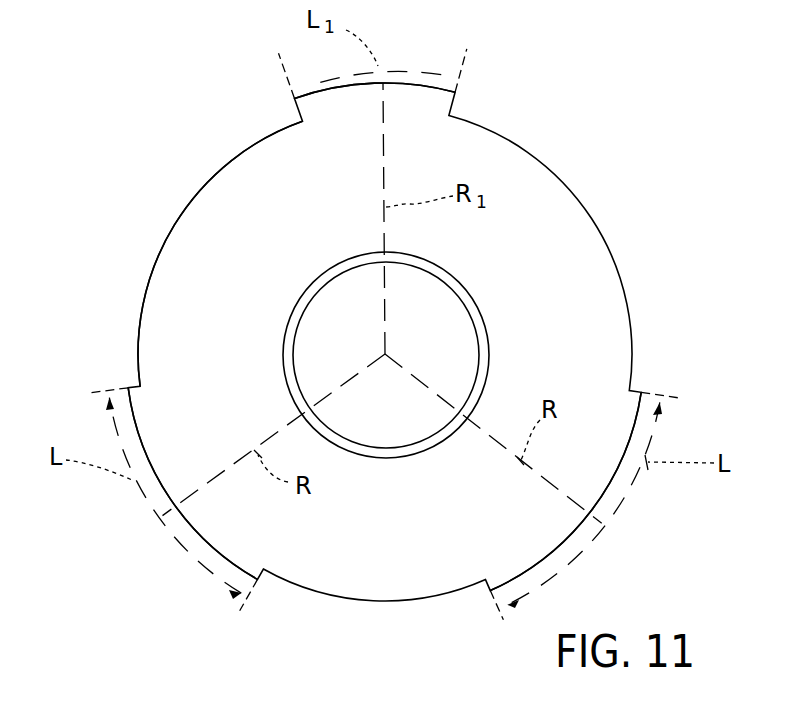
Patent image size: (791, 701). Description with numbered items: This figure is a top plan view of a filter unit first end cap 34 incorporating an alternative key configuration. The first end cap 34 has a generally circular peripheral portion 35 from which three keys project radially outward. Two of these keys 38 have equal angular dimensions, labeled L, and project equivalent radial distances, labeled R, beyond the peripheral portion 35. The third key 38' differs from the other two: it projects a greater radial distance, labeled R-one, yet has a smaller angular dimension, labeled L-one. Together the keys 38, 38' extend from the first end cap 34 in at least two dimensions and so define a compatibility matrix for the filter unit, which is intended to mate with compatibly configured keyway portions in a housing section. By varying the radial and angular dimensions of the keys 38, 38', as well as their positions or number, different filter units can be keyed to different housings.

The filter unit first end cap 34 is at (592, 174).
The generally circular peripheral portion 35 is at (164, 242).
The radially projecting keys 38 is at (393, 489).
The radially projecting key 38' is at (324, 79).